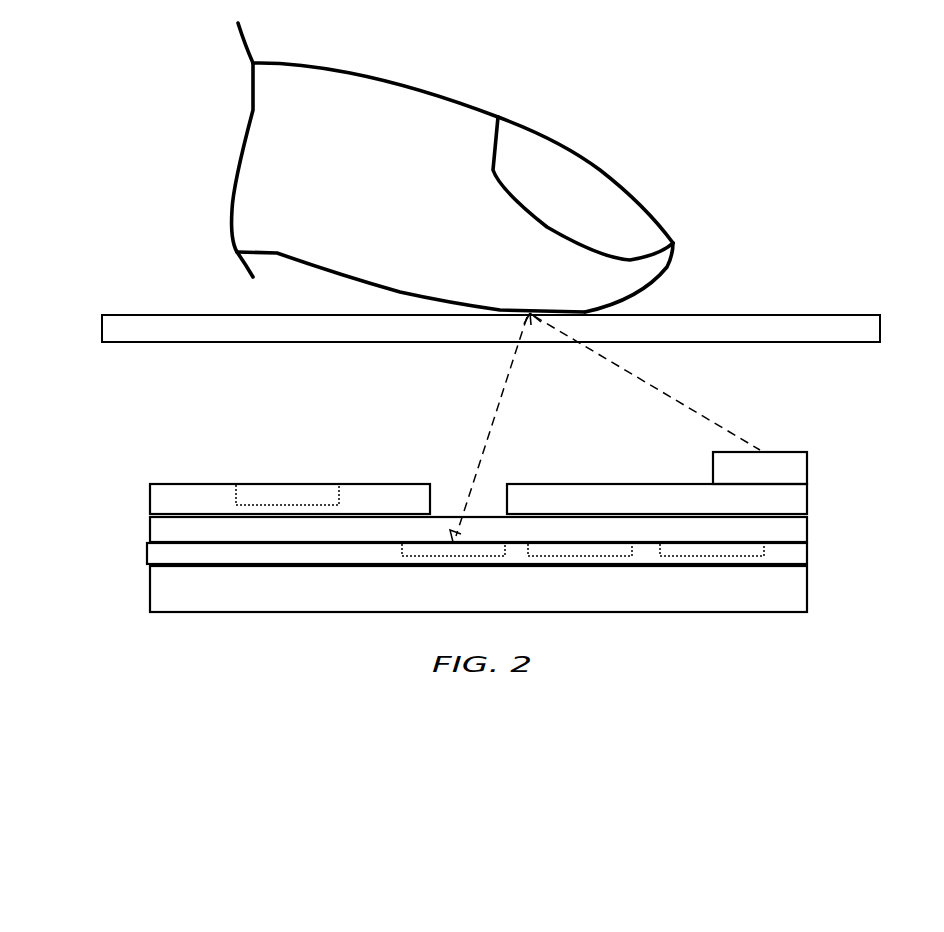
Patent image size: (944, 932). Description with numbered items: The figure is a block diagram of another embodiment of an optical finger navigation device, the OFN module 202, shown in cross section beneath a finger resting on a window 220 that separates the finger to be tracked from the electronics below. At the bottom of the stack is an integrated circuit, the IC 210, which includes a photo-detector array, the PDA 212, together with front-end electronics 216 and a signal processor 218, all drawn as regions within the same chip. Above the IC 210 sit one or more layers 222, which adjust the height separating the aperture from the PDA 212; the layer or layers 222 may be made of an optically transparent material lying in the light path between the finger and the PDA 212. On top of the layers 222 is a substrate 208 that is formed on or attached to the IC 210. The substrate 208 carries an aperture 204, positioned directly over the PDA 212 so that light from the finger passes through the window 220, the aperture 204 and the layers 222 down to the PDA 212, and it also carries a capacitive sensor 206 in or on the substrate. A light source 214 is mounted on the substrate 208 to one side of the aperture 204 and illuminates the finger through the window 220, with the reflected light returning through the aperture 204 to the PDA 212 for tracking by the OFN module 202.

The OFN module 202 is at (118, 281).
The aperture 204 is at (461, 502).
The capacitive sensor 206 is at (290, 483).
The substrate 208 is at (217, 514).
The integrated circuit 210 is at (213, 599).
The photo-detector array 212 is at (452, 557).
The light source 214 is at (784, 482).
The front-end electronics 216 is at (578, 557).
The signal processor 218 is at (710, 557).
The window 220 is at (204, 339).
The layers 222 is at (217, 541).